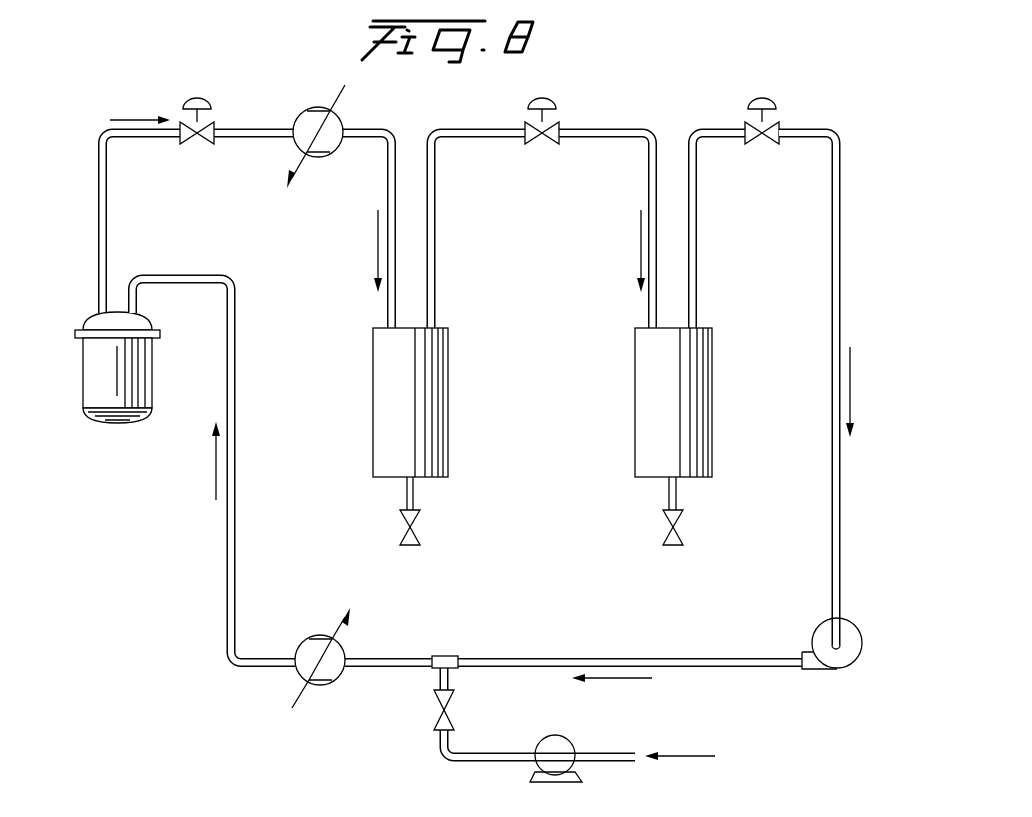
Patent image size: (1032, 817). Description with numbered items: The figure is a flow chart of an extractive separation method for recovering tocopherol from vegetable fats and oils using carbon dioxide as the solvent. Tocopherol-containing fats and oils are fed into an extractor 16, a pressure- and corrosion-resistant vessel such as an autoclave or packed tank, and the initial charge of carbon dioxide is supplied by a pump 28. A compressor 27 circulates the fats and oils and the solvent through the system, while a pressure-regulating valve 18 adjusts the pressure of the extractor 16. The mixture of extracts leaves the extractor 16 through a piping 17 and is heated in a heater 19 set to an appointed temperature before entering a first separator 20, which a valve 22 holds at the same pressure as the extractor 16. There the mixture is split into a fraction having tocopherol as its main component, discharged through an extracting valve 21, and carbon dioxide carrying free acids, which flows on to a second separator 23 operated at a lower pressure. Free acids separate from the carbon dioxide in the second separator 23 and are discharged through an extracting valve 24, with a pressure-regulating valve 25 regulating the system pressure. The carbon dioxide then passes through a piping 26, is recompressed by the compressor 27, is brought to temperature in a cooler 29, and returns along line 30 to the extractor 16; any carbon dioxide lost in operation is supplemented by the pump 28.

The extractor 16 is at (152, 375).
The piping 17 is at (108, 128).
The pressure-regulating valve 18 is at (207, 99).
The heater 19 is at (342, 122).
The first separator 20 is at (448, 370).
The extracting valve 21 is at (420, 531).
The valve 22 is at (549, 96).
The second separator 23 is at (712, 372).
The extracting valve 24 is at (683, 531).
The pressure-regulating valve 25 is at (770, 100).
The piping 26 is at (840, 252).
The compressor 27 is at (862, 644).
The pump 28 is at (572, 738).
The cooler 29 is at (343, 648).
The recycle line 30 is at (235, 505).